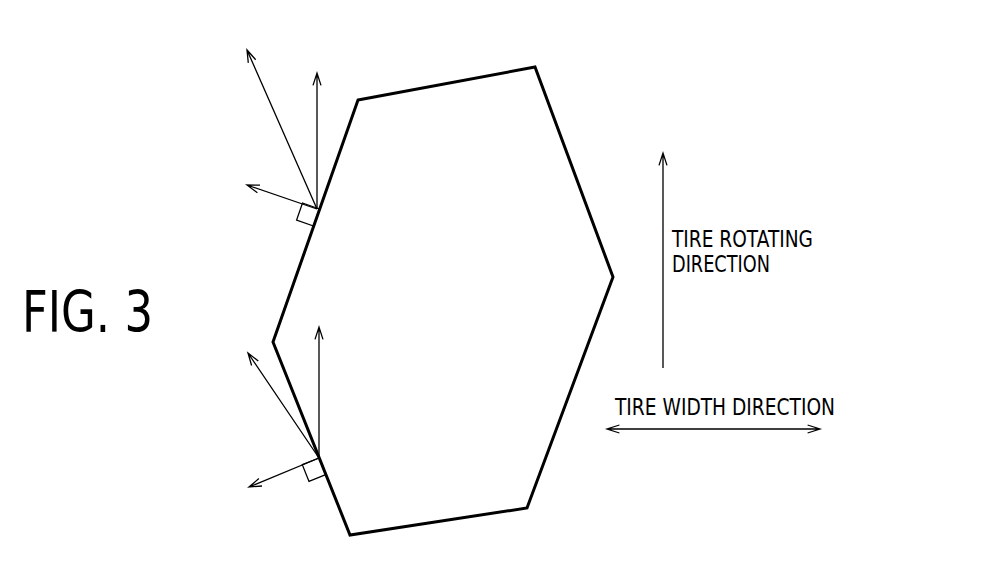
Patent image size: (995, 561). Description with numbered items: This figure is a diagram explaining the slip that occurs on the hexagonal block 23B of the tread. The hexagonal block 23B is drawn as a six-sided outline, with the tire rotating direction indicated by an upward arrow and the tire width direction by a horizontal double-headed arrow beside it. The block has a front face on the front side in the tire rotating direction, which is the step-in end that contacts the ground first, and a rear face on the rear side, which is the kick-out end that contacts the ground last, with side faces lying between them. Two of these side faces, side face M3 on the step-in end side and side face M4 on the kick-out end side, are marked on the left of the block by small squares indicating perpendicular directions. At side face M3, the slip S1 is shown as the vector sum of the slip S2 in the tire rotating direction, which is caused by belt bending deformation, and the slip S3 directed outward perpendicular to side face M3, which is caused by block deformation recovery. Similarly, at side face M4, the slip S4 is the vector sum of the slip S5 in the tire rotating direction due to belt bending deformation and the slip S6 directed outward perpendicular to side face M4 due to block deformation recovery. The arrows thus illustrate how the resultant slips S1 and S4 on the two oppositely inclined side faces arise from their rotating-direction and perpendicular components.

The hexagonal block 23B is at (525, 145).
The slip on side face M3 S1 is at (272, 112).
The slip in tire rotating direction S2 is at (317, 124).
The slip perpendicular to side face M3 S3 is at (266, 189).
The slip of side face M4 S4 is at (273, 390).
The slip in tire rotating direction S5 is at (318, 376).
The slip perpendicular to side face M4 S6 is at (267, 482).
The side face M3 is at (310, 236).
The side face M4 is at (330, 487).